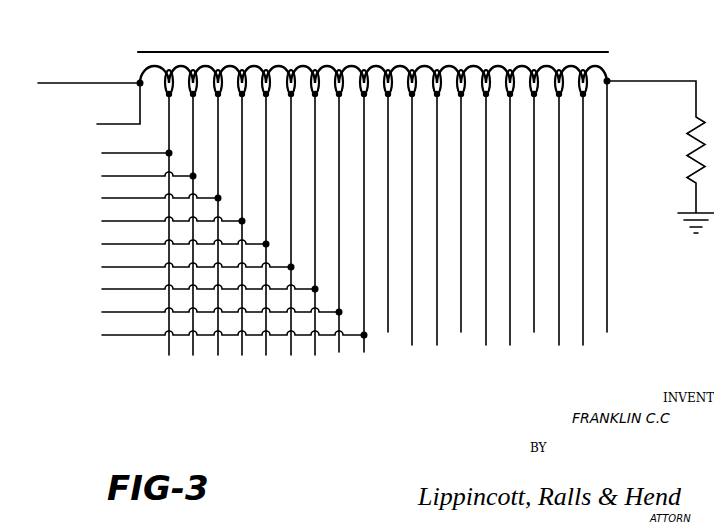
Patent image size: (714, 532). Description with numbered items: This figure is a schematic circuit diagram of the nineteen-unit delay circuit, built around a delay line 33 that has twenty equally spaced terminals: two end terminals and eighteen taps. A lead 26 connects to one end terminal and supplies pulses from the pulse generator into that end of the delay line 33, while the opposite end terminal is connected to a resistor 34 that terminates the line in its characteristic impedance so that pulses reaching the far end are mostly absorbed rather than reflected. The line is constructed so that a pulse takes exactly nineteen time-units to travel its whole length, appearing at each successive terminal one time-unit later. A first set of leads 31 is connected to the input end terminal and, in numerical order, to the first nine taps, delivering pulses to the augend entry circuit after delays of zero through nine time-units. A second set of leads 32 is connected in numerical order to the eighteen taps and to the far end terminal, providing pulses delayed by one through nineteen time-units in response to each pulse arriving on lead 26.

The lead 26 is at (76, 58).
The delay line 33 is at (381, 47).
The resistor 34 is at (689, 156).
The leads 31 is at (207, 211).
The leads 32 is at (386, 239).